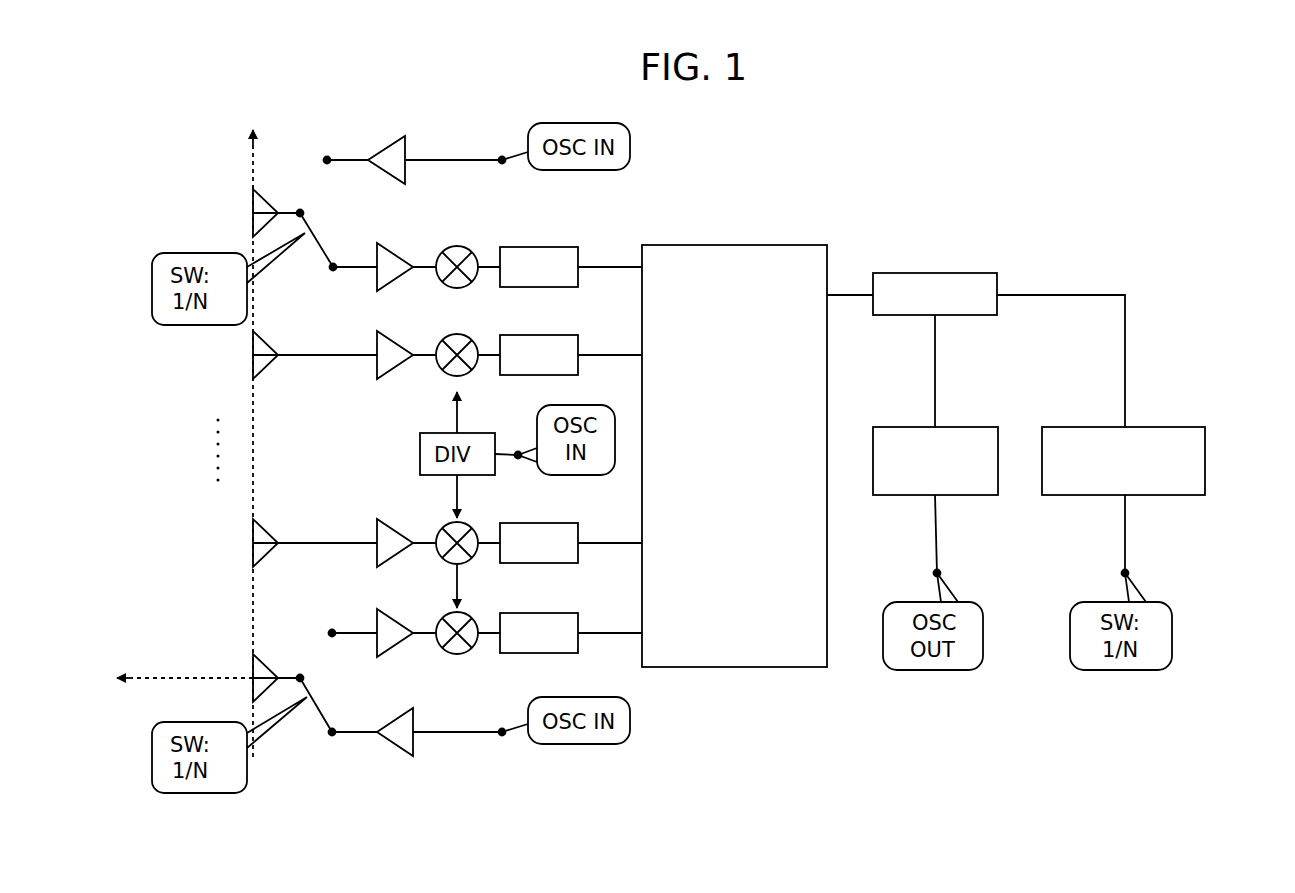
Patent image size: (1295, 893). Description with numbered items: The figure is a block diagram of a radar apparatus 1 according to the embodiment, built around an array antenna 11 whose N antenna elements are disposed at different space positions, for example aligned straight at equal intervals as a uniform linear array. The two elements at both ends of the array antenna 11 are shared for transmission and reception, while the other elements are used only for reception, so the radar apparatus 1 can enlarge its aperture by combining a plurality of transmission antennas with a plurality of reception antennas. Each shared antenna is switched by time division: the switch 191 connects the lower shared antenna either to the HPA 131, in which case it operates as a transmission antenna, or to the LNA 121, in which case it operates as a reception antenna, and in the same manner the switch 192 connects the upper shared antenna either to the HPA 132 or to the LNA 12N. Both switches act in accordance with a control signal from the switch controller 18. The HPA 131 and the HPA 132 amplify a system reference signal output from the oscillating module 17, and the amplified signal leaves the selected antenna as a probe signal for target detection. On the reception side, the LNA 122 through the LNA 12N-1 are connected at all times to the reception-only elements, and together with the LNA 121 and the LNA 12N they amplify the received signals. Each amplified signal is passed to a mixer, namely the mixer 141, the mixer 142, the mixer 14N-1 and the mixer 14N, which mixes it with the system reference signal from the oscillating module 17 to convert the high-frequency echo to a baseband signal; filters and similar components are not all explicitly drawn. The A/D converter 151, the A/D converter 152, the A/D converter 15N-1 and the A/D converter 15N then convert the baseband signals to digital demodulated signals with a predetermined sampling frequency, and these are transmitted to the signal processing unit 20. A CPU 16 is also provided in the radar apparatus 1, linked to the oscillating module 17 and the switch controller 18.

The radar apparatus 1 is at (1172, 196).
The array antenna 11 is at (187, 170).
The LNA 12N is at (383, 244).
The LNA 12N-1 is at (378, 375).
The LNA 122 is at (380, 522).
The LNA 121 is at (380, 615).
The HPA 131 is at (386, 745).
The HPA 132 is at (383, 150).
The mixer 14N is at (454, 246).
The mixer 14N-1 is at (453, 333).
The mixer 142 is at (448, 566).
The mixer 141 is at (456, 656).
The A/D converter 15N is at (541, 247).
The A/D converter 15N-1 is at (541, 335).
The A/D converter 152 is at (539, 523).
The A/D converter 151 is at (539, 613).
The CPU 16 is at (897, 273).
The oscillating module 17 is at (897, 427).
The switch controller 18 is at (1077, 427).
The switch 191 is at (334, 727).
The switch 192 is at (331, 274).
The signal processing unit 20 is at (780, 245).